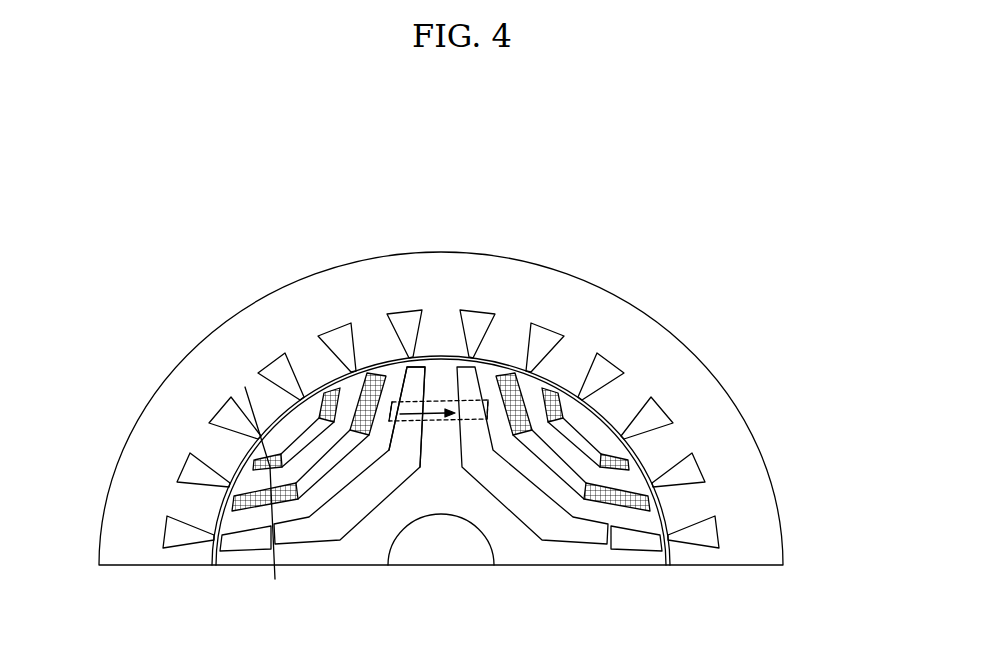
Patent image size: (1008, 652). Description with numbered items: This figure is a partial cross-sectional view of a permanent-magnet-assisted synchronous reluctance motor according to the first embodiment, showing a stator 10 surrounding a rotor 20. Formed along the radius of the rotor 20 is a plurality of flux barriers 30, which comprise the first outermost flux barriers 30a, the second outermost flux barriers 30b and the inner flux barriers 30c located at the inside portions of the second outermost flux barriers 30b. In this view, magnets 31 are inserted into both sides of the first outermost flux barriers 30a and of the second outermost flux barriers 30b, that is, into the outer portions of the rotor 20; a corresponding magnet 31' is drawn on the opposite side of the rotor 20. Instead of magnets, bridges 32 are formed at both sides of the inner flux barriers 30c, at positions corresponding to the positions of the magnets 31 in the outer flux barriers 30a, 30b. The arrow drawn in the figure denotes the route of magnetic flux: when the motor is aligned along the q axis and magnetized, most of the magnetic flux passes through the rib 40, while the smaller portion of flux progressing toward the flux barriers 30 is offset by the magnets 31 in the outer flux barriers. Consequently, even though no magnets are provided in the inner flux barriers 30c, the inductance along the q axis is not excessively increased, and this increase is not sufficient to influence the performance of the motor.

The stator 10 is at (132, 517).
The rotor 20 is at (501, 401).
The flux barriers 30 is at (565, 441).
The first outermost flux barriers 30a is at (565, 468).
The second outermost flux barriers 30b is at (556, 494).
The inner flux barriers 30c is at (545, 523).
The magnets 31 is at (588, 346).
The auxiliary permanent magnet 31' is at (324, 318).
The bridges 32 is at (445, 402).
The rib 40 is at (490, 398).
The q axis q is at (223, 368).